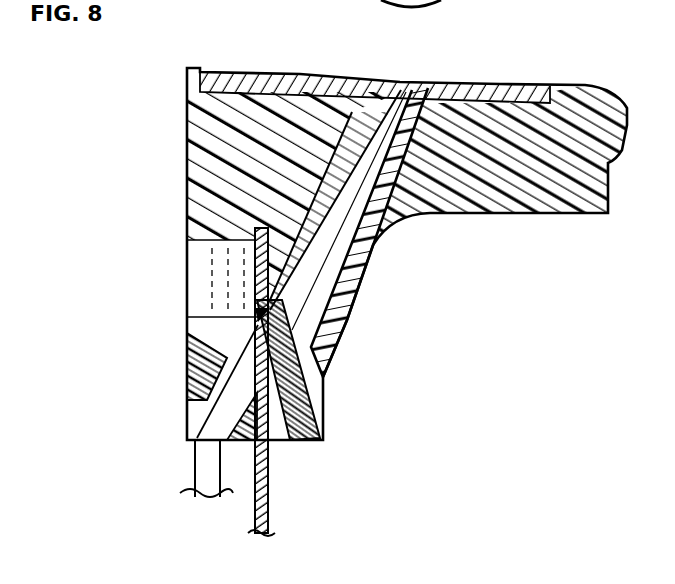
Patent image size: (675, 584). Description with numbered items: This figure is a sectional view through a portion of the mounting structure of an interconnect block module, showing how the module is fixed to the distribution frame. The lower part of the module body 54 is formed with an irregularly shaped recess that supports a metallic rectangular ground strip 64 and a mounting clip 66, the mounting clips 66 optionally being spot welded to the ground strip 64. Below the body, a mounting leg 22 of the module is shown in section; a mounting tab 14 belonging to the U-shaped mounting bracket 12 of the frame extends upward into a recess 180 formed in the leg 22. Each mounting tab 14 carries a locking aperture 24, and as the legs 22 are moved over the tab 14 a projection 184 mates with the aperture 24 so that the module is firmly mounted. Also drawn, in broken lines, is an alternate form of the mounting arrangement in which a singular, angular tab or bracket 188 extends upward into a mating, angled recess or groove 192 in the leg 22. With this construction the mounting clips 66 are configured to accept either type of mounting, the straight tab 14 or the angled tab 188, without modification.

The mounting bracket 12 is at (273, 505).
The mounting tab 14 is at (262, 452).
The mounting leg 22 is at (348, 322).
The locking aperture 24 is at (187, 353).
The module body 54 is at (555, 205).
The ground strip 64 is at (404, 53).
The mounting clip 66 is at (303, 417).
The recess 180 is at (262, 236).
The projection 184 is at (187, 317).
The angular tab 188 is at (320, 177).
The angled recess 192 is at (327, 147).